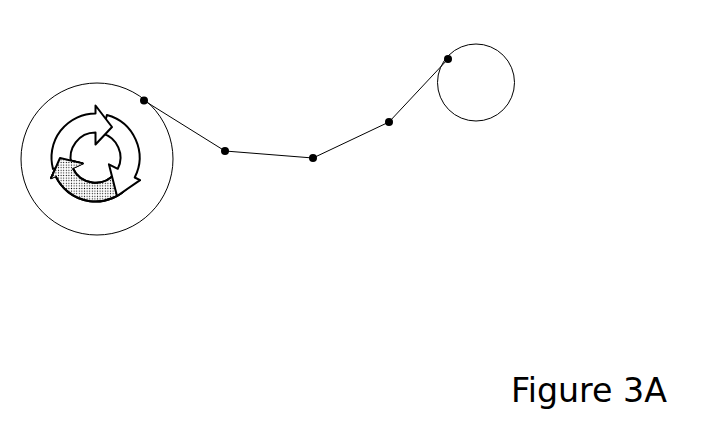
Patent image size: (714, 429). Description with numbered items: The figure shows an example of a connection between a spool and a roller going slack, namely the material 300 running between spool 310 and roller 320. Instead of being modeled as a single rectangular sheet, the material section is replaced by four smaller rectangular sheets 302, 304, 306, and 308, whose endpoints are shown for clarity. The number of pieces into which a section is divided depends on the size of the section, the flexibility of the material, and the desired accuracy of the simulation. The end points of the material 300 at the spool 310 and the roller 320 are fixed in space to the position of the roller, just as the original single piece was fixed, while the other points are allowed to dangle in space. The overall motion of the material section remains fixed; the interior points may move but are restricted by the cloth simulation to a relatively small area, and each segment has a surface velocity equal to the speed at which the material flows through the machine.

The material 300 is at (110, 80).
The rectangular sheet 302 is at (198, 130).
The rectangular sheet 304 is at (275, 155).
The rectangular sheet 306 is at (362, 138).
The rectangular sheet 308 is at (413, 92).
The spool 310 is at (136, 224).
The roller 320 is at (464, 120).